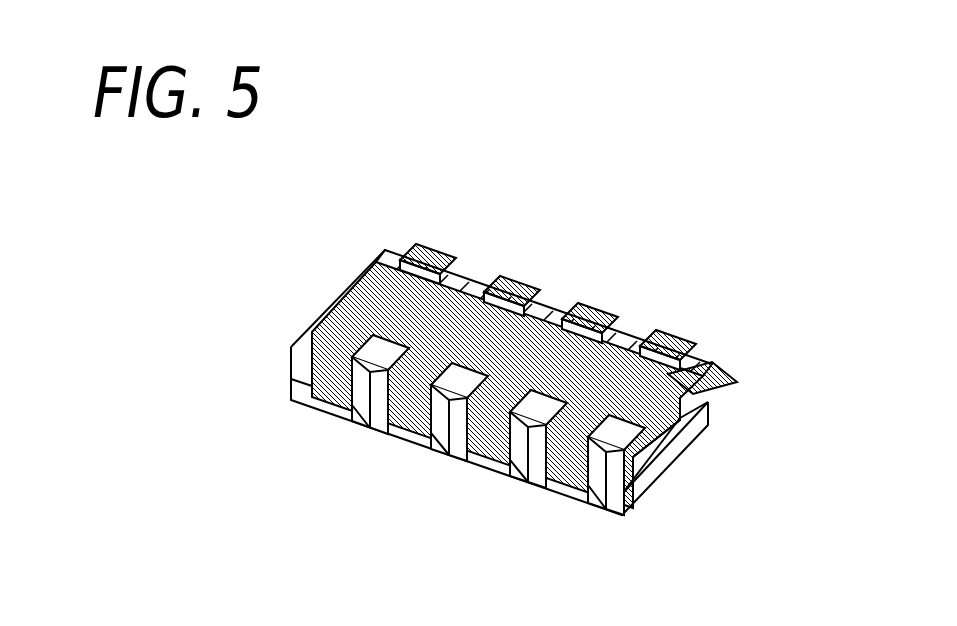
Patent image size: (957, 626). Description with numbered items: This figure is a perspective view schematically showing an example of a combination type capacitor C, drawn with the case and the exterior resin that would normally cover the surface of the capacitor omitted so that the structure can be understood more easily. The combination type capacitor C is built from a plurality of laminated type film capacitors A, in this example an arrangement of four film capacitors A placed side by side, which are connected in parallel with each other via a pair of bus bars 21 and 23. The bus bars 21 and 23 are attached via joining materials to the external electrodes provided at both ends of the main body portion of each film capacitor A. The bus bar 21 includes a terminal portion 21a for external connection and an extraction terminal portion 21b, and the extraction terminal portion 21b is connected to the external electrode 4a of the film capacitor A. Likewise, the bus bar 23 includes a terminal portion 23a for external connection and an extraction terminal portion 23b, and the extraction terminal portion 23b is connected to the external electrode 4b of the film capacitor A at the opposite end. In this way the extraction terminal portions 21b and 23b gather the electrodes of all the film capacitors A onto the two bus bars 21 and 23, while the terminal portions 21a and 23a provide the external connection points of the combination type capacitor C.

The external electrode 4a is at (383, 433).
The external electrode 4b is at (717, 413).
The bus bar 21 is at (699, 579).
The terminal portion 21a is at (688, 420).
The extraction terminal portion 21b is at (597, 514).
The bus bar 23 is at (568, 275).
The terminal portion 23a is at (717, 363).
The extraction terminal portion 23b is at (655, 340).
The film capacitor A is at (348, 318).
The combination type capacitor C is at (727, 131).